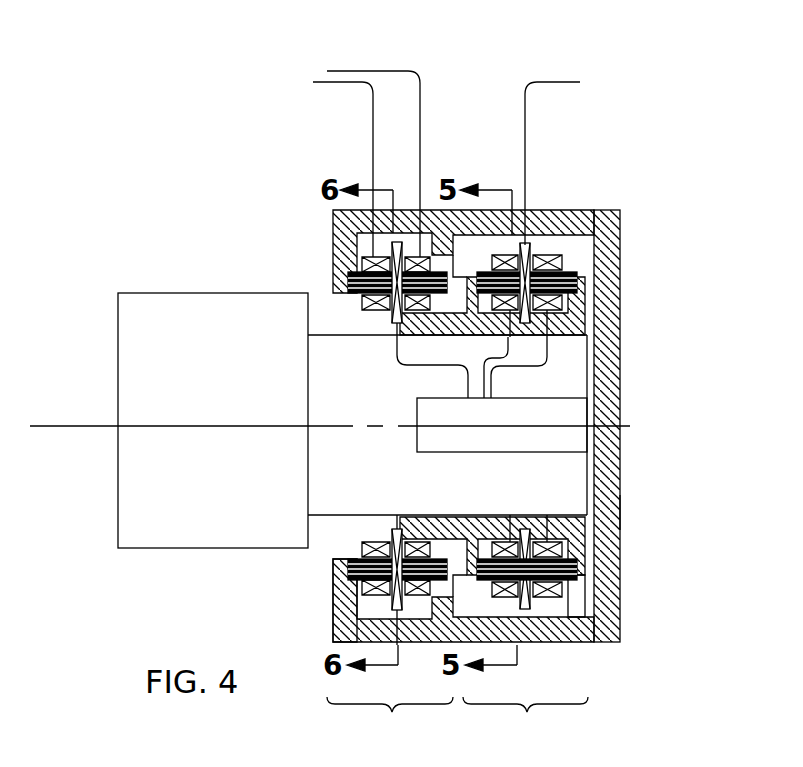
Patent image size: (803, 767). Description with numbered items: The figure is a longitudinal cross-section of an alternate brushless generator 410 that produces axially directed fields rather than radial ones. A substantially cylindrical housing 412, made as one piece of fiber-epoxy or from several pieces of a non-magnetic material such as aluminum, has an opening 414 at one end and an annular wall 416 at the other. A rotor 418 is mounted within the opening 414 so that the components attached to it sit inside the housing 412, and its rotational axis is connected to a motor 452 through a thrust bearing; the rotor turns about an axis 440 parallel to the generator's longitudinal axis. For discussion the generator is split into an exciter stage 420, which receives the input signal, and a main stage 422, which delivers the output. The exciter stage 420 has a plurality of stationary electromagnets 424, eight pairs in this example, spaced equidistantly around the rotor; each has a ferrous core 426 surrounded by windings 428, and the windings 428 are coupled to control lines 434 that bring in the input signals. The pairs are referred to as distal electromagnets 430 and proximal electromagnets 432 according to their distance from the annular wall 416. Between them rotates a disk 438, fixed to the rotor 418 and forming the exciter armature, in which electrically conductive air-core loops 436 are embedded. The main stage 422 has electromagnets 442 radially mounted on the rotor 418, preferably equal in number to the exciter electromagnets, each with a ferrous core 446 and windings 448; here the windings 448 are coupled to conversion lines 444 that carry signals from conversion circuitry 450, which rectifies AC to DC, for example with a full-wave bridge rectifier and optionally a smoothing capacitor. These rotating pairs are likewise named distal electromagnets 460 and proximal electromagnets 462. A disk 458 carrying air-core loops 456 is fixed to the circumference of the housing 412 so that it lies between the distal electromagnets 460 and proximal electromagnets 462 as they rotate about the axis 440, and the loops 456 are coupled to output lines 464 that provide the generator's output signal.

The brushless generator 410 is at (474, 331).
The housing 412 is at (565, 208).
The opening 414 is at (358, 325).
The annular wall 416 is at (620, 278).
The rotor 418 is at (338, 515).
The exciter stage 420 is at (390, 722).
The main stage 422 is at (525, 722).
The stationary electromagnets 424 is at (365, 543).
The ferrous core 426 is at (355, 320).
The windings 428 is at (368, 337).
The distal electromagnets 430 is at (340, 595).
The proximal electromagnets 432 is at (460, 525).
The control lines 434 is at (312, 58).
The air-core loops 436 is at (400, 523).
The disk 438 is at (378, 337).
The axis 440 is at (88, 427).
The electromagnets 442 is at (621, 512).
The conversion lines 444 is at (493, 363).
The ferrous core 446 is at (570, 270).
The windings 448 is at (548, 255).
The conversion circuitry 450 is at (417, 436).
The motor 452 is at (178, 548).
The air-core loops 456 is at (588, 617).
The disk 458 is at (545, 598).
The distal electromagnets 460 is at (497, 541).
The proximal electromagnets 462 is at (568, 585).
The output lines 464 is at (574, 63).